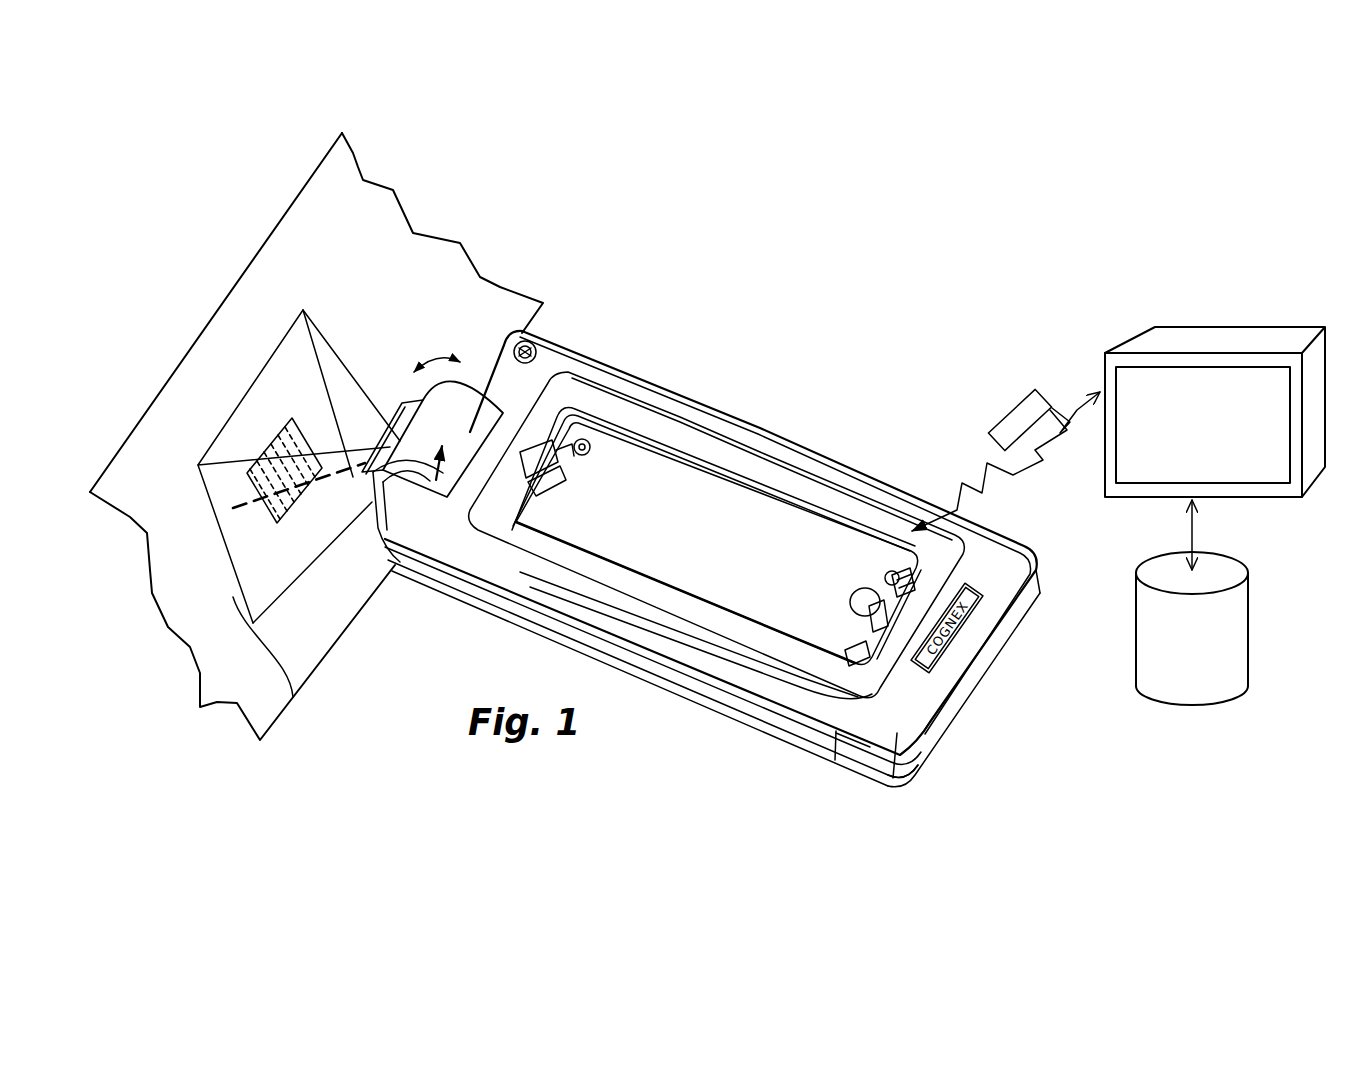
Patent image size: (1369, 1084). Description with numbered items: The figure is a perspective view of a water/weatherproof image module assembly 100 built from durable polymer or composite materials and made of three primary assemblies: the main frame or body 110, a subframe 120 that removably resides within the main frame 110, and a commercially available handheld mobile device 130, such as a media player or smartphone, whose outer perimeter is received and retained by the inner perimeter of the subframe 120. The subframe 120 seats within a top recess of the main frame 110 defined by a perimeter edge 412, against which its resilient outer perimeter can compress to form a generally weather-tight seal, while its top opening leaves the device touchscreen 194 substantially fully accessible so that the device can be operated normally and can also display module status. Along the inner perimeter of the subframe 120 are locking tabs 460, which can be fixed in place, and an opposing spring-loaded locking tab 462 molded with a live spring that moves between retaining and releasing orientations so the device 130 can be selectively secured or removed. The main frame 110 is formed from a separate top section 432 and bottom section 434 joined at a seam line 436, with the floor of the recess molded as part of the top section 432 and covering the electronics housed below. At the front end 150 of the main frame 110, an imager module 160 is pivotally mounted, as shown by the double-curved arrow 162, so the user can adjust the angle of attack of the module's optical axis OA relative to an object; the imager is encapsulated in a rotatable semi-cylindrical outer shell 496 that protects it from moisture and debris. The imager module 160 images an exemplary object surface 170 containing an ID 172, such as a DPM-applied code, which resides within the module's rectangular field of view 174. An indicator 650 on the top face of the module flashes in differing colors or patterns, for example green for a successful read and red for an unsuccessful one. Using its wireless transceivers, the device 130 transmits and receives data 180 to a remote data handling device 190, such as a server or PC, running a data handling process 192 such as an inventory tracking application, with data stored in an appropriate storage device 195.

The image module assembly 100 is at (713, 367).
The main frame or body 110 is at (917, 705).
The subframe 120 is at (815, 493).
The handheld mobile device 130 is at (693, 473).
The front end 150 is at (481, 352).
The imager module 160 is at (436, 490).
The double-curved arrow 162 is at (433, 358).
The object surface 170 is at (337, 205).
The ID 172 is at (277, 433).
The field of view 174 is at (293, 697).
The data 180 is at (1034, 389).
The data handling device 190 is at (1190, 323).
The data handling process 192 is at (1212, 375).
The device touchscreen 194 is at (648, 541).
The storage device 195 is at (1233, 702).
The perimeter edge 412 is at (618, 387).
The top section 432 is at (913, 743).
The bottom section 434 is at (903, 773).
The seam line 436 is at (843, 737).
The locking tabs 460 is at (905, 570).
The spring-loaded locking tab 462 is at (532, 446).
The semi-cylindrical outer shell 496 is at (408, 462).
The indicator 650 is at (535, 343).
The optical axis OA is at (243, 512).